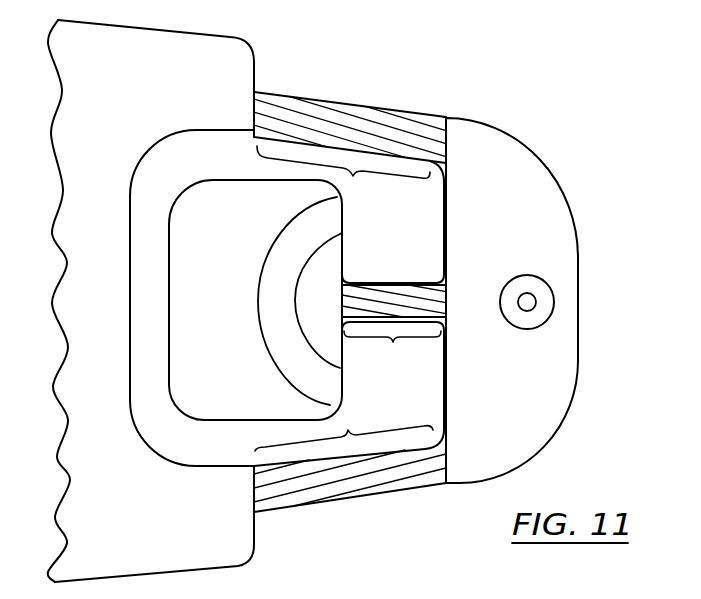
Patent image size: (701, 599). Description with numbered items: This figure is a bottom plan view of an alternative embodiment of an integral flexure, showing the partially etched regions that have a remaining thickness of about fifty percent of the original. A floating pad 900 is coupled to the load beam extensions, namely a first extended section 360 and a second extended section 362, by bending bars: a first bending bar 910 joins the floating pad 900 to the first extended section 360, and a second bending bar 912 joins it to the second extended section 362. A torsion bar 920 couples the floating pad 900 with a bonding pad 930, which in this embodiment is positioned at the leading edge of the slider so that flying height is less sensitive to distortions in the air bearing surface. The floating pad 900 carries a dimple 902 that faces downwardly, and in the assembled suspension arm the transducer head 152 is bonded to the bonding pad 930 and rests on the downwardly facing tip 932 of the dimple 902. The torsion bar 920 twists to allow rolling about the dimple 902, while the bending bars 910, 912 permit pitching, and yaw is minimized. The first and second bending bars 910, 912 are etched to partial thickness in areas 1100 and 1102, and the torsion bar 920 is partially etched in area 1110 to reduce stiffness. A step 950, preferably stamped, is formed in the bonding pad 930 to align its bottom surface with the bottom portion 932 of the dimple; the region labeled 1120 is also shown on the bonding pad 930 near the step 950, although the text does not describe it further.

The transducer head 152 is at (513, 5).
The first extended section 360 is at (207, 543).
The second extended section 362 is at (210, 50).
The floating pad 900 is at (535, 198).
The dimple 902 is at (528, 316).
The first bending bar 910 is at (382, 482).
The second bending bar 912 is at (395, 110).
The torsion bar 920 is at (373, 282).
The bonding pad 930 is at (258, 227).
The tip of the dimple 932 is at (528, 288).
The step 950 is at (278, 330).
The partially etched area 1100 is at (344, 430).
The partially etched area 1102 is at (343, 174).
The partially etched area 1110 is at (392, 349).
The inner curved surface 1120 is at (320, 282).